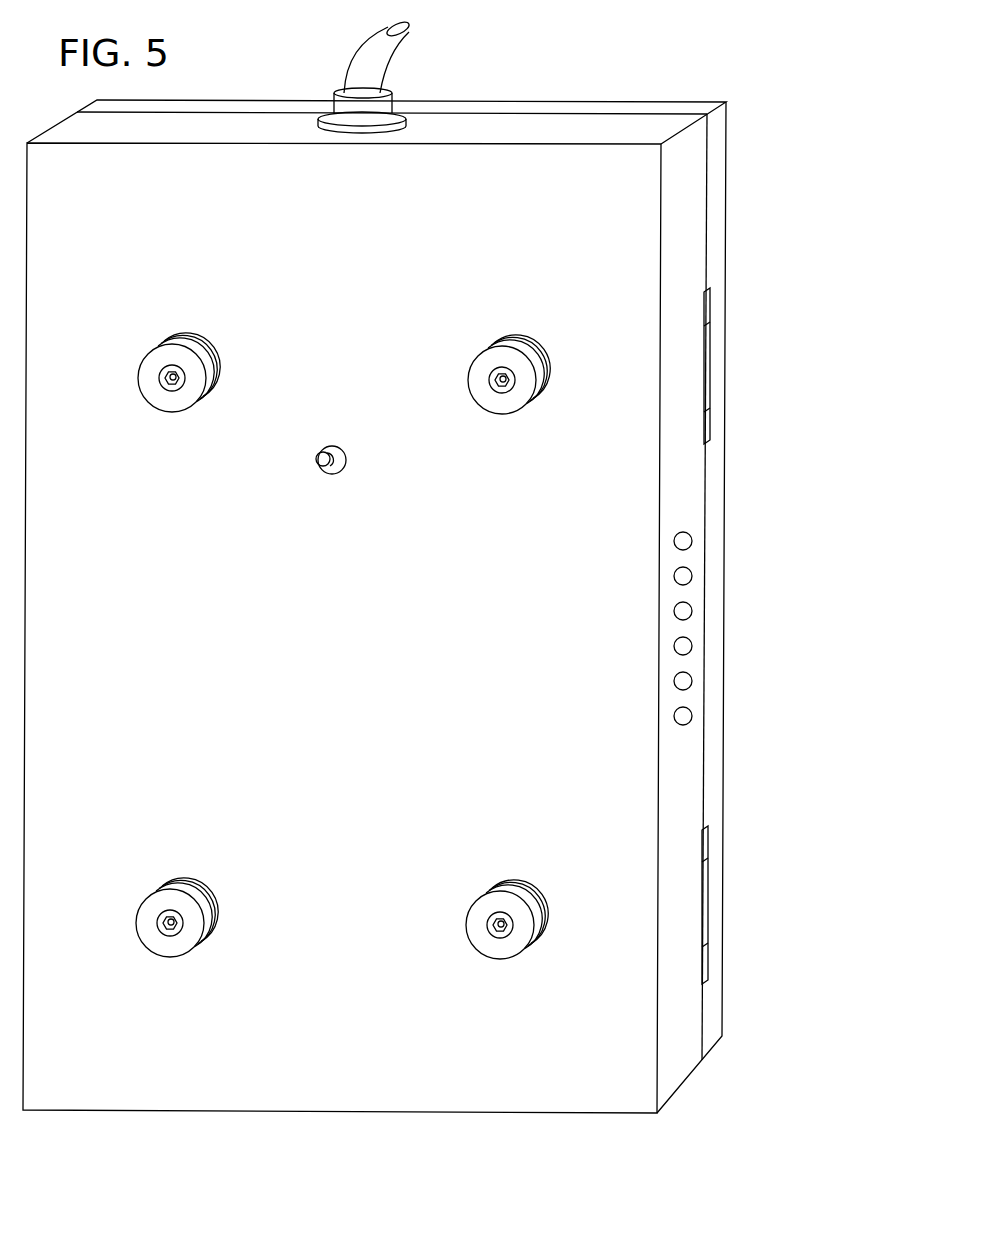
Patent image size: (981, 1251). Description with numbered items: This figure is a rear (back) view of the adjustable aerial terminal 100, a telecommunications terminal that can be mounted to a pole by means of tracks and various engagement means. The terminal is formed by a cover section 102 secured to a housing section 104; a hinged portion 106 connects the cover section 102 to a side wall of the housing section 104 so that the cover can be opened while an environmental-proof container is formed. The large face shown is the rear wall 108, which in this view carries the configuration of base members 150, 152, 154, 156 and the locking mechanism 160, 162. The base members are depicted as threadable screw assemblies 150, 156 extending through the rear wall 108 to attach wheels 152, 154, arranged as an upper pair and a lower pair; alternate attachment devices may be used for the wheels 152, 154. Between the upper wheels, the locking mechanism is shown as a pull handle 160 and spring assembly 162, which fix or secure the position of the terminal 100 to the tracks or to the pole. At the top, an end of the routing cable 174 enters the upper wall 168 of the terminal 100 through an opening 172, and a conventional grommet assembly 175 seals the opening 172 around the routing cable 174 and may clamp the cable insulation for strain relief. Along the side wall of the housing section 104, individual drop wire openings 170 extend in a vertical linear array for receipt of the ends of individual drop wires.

The adjustable aerial terminal 100 is at (421, 604).
The cover section 102 is at (714, 982).
The housing section 104 is at (682, 261).
The hinged portion 106 is at (706, 358).
The rear wall 108 is at (487, 1075).
The base member (threadable screw assembly) 150 is at (172, 384).
The base member (wheel) 152 is at (339, 363).
The base member (wheel) 154 is at (342, 926).
The base member (threadable screw assembly) 156 is at (172, 930).
The pull handle 160 is at (342, 460).
The spring assembly 162 is at (333, 446).
The upper wall 168 is at (563, 123).
The drop wire openings 170 is at (692, 543).
The opening 172 is at (363, 76).
The routing cable 174 is at (345, 69).
The grommet assembly 175 is at (330, 96).